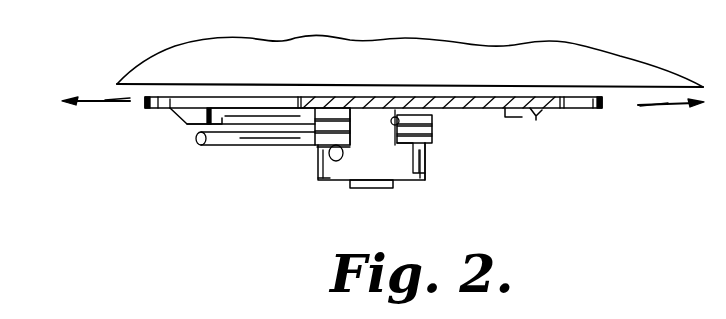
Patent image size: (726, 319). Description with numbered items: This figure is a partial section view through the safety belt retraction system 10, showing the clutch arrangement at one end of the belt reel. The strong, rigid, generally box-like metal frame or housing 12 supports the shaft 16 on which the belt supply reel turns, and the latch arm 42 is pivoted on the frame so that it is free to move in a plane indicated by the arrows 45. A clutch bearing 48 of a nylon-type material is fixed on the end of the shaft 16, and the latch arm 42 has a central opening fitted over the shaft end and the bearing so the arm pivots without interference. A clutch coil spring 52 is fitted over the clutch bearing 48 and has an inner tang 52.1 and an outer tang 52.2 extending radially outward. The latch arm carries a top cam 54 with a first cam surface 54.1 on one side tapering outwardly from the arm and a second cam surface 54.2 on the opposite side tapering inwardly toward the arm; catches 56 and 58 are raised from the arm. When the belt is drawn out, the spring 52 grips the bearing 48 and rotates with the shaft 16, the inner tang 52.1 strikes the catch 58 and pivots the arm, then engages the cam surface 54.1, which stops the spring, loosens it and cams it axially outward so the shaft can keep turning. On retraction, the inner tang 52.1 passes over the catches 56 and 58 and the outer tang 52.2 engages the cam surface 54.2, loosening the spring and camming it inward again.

The safety belt retraction system 10 is at (203, 162).
The frame or housing 12 is at (588, 51).
The shaft 16 is at (367, 157).
The latch arm 42 is at (590, 109).
The arrows 45 is at (92, 104).
The clutch bearing 48 is at (412, 181).
The clutch coil spring 52 is at (427, 141).
The inner tang 52.1 is at (197, 125).
The outer tang 52.2 is at (287, 146).
The top cam 54 is at (332, 180).
The first cam surface 54.1 is at (427, 123).
The second cam surface 54.2 is at (317, 178).
The catch 56 is at (178, 116).
The catch 58 is at (533, 112).